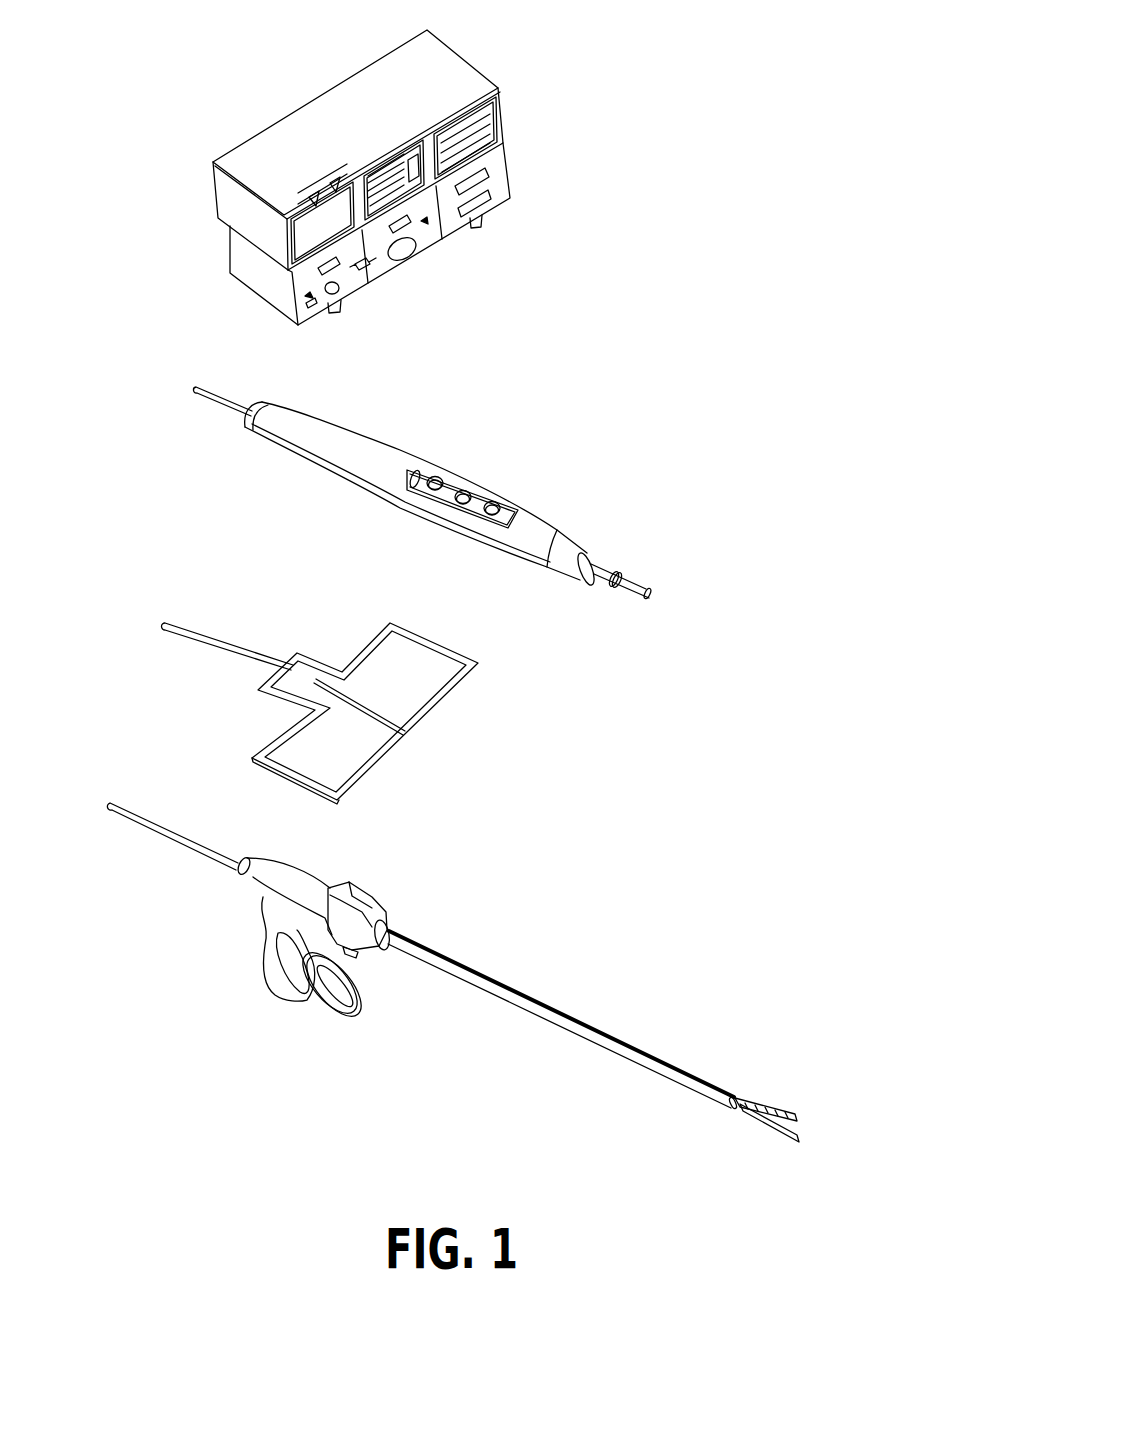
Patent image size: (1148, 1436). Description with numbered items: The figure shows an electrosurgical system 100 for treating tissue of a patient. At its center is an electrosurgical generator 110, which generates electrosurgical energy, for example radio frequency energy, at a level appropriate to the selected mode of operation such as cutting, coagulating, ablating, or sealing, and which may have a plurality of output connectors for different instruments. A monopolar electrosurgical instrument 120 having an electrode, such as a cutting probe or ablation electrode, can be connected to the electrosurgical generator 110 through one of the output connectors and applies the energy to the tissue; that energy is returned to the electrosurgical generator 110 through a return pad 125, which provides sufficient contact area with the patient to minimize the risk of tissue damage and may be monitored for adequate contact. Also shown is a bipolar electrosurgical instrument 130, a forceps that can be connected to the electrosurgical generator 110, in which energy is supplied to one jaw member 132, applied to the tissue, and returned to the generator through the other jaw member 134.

The electrosurgical system 100 is at (737, 110).
The electrosurgical generator 110 is at (282, 67).
The monopolar electrosurgical instrument 120 is at (495, 466).
The return pad 125 is at (414, 737).
The bipolar electrosurgical instrument 130 is at (517, 991).
The jaw member 132 is at (778, 1104).
The jaw member 134 is at (769, 1130).